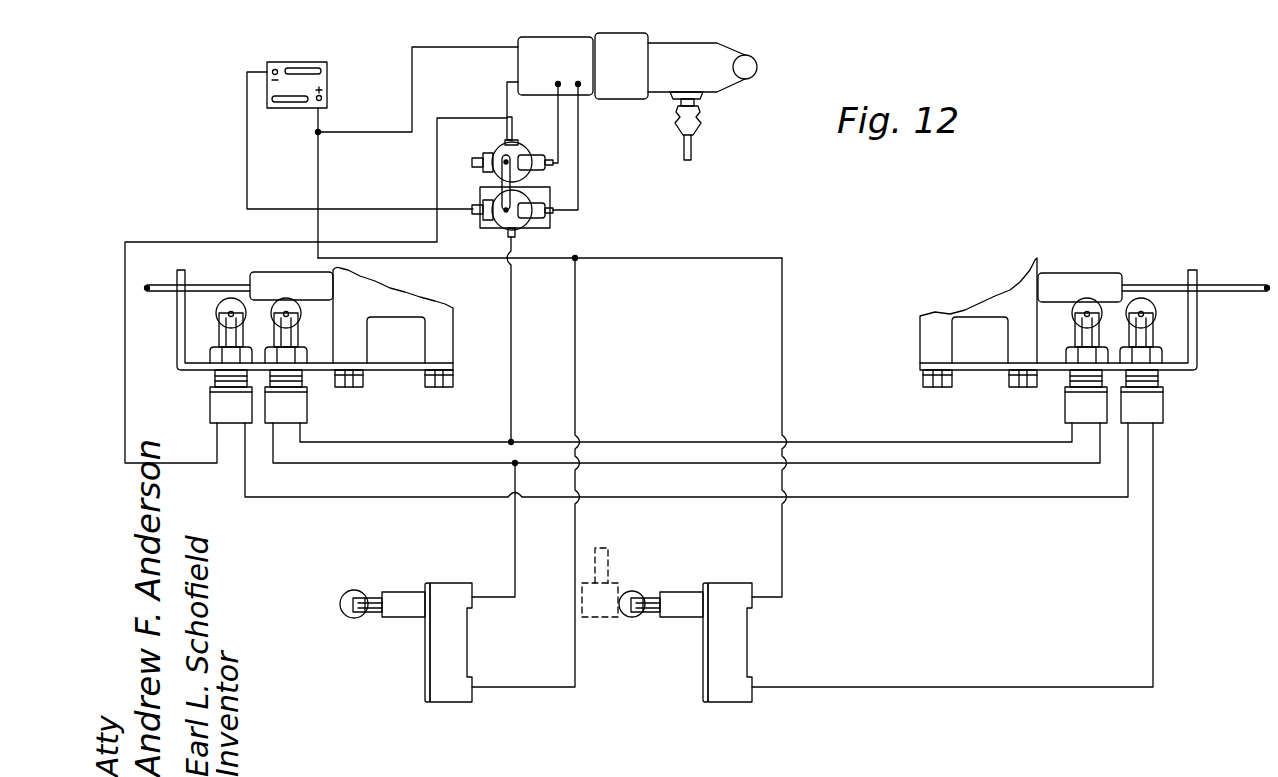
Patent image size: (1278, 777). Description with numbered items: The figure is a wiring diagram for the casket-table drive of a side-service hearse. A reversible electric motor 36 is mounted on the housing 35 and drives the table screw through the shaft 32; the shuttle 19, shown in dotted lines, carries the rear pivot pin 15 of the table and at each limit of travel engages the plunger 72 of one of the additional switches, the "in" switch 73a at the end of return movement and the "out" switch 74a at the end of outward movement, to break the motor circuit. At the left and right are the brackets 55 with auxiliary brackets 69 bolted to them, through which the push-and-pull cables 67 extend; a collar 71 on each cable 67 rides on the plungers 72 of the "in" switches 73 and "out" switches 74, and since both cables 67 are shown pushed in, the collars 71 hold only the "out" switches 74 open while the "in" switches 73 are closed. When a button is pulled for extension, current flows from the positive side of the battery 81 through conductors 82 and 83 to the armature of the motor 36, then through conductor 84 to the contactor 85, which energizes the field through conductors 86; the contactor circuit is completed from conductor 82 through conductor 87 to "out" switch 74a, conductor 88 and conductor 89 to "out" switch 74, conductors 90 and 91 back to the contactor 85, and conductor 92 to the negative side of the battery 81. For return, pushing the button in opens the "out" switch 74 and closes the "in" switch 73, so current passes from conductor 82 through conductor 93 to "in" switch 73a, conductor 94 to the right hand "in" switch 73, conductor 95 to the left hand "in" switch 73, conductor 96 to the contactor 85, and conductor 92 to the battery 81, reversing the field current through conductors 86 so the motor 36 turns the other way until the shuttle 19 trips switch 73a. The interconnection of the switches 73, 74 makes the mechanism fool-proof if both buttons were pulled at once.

The rear pivot pin 15 is at (612, 556).
The shuttle 19 is at (620, 580).
The shaft 32 is at (684, 148).
The housing 35 is at (688, 52).
The reversible electric motor 36 is at (548, 40).
The bracket 55 is at (920, 335).
The cable 67 is at (1215, 283).
The auxiliary bracket 69 is at (1215, 322).
The collar 71 is at (1065, 272).
The plunger 72 is at (628, 620).
The "in" switch 73 is at (1190, 397).
The additional "in" switch 73a is at (730, 702).
The "out" switch 74 is at (1062, 406).
The additional "out" switch 74a is at (453, 702).
The battery 81 is at (327, 80).
The conductor 82 is at (318, 172).
The conductor 83 is at (412, 90).
The conductor 84 is at (505, 103).
The contactor 85 is at (500, 152).
The conductors 86 is at (577, 133).
The conductor 87 is at (578, 357).
The conductor 88 is at (516, 520).
The conductor 89 is at (341, 465).
The conductor 90 is at (410, 441).
The conductor 91 is at (512, 345).
The conductor 92 is at (345, 209).
The conductor 93 is at (785, 375).
The conductor 94 is at (930, 686).
The conductor 95 is at (865, 500).
The conductor 96 is at (125, 382).